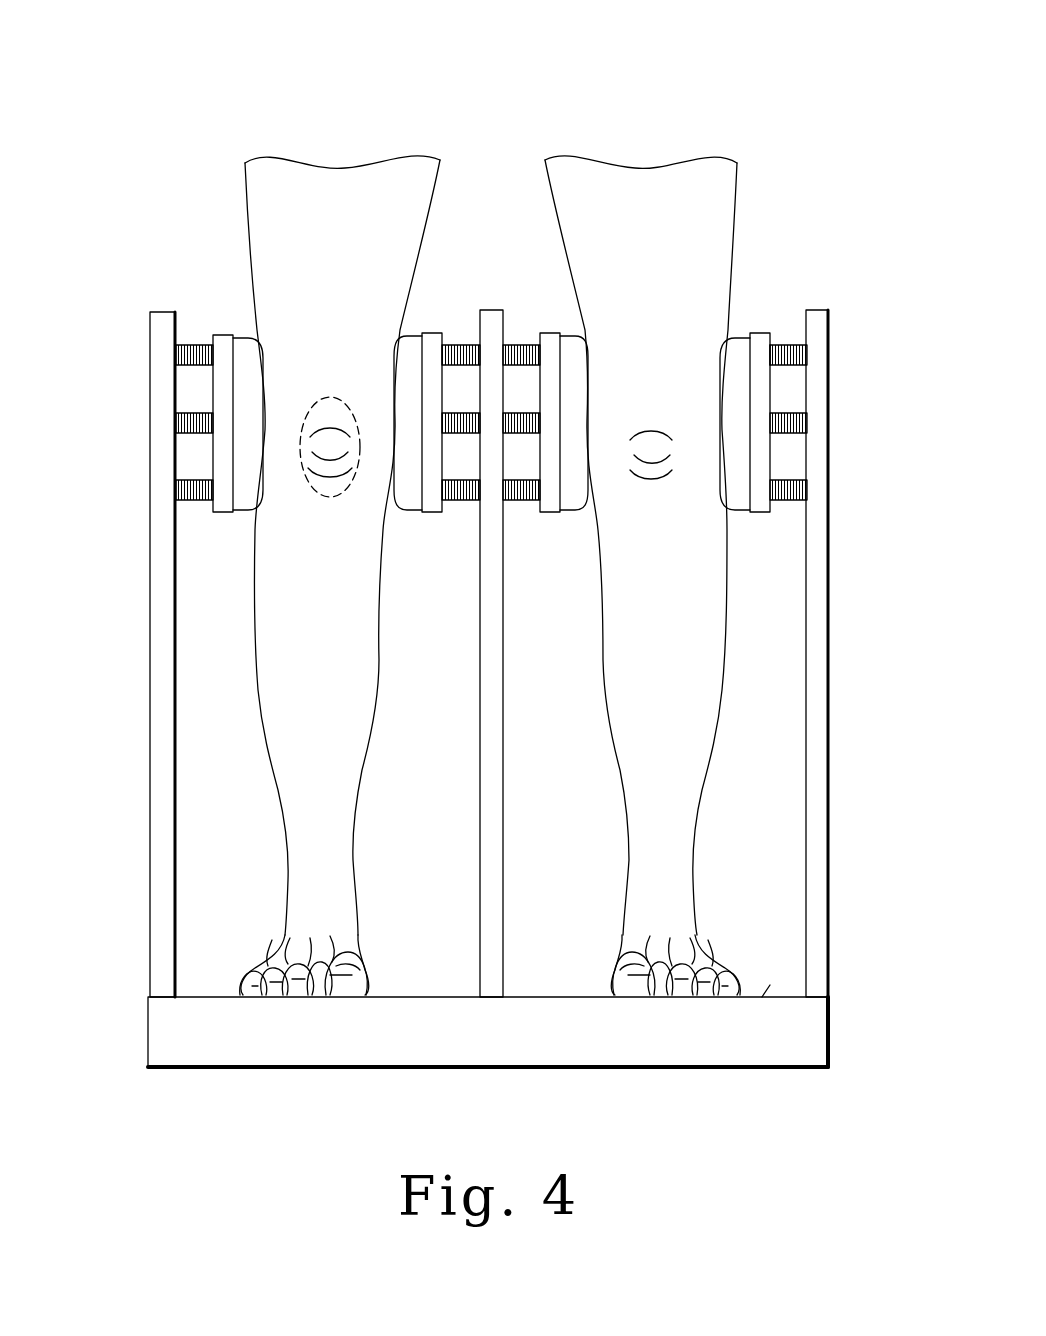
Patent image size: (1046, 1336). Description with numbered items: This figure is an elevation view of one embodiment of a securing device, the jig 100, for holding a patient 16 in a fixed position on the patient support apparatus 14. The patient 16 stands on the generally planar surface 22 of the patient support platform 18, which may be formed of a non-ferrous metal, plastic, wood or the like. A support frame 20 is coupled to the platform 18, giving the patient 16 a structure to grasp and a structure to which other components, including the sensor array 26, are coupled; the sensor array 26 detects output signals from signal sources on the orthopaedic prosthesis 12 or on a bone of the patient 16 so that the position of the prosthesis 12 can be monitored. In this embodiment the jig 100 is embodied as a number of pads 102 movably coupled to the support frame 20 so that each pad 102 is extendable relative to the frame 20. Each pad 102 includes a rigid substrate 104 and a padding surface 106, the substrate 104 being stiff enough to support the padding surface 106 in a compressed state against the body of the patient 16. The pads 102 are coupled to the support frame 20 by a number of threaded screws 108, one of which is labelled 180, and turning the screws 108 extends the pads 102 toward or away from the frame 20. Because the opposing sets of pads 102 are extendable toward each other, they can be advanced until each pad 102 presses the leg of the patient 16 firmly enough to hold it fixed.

The patient support apparatus 14 is at (147, 89).
The patient 16 is at (738, 200).
The patient support platform 18 is at (313, 1050).
The support frame 20 is at (160, 356).
The sensor array 26 is at (493, 310).
The planar surface 22 is at (773, 992).
The orthopaedic prosthesis 12 is at (326, 395).
The jig 100 is at (224, 238).
The pad 102 is at (233, 536).
The substrate 104 is at (222, 334).
The padding surface 106 is at (248, 337).
The threaded screws 108 is at (192, 364).
The adjustment screw 180 is at (790, 367).